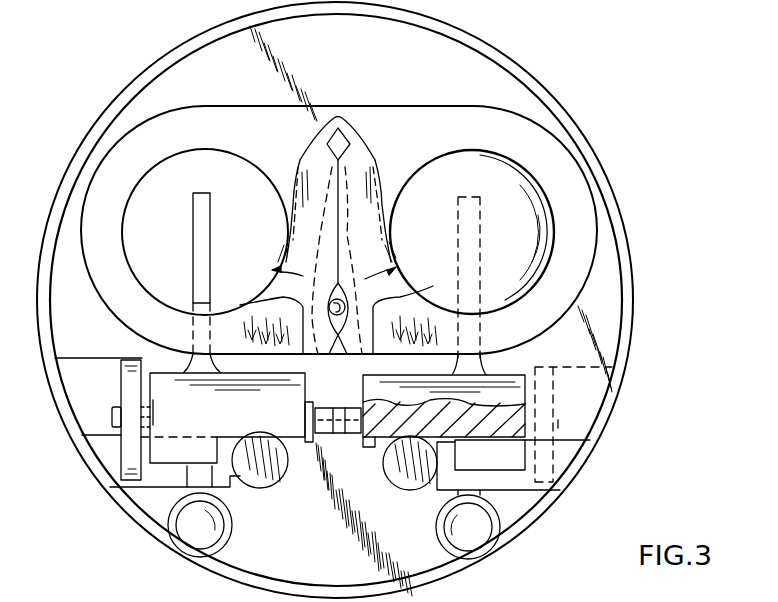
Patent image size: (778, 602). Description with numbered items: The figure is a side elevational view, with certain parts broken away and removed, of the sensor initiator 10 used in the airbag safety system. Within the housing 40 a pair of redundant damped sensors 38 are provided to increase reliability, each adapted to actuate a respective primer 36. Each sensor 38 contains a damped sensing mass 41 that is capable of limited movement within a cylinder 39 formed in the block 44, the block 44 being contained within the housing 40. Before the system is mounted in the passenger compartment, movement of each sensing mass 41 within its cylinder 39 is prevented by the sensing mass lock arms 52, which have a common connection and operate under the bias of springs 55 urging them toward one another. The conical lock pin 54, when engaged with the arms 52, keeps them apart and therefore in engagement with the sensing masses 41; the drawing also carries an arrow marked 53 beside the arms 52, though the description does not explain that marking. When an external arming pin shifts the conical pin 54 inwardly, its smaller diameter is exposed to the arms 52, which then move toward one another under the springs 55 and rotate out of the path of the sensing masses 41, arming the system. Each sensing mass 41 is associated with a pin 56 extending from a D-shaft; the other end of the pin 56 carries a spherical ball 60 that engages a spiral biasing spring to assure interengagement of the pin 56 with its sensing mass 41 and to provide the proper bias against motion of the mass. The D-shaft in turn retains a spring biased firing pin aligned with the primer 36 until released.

The sensor initiator 10 is at (648, 376).
The housing 40 is at (192, 40).
The block 44 is at (75, 305).
The damped sensors 38 is at (173, 97).
The cylinder 39 is at (208, 156).
The sensing mass 41 is at (520, 232).
The sensing mass lock arms 52 is at (368, 140).
The direction of movement 53 is at (295, 267).
The conical lock pin 54 is at (415, 284).
The springs 55 is at (371, 360).
The pin 56 is at (205, 240).
The primers 36 is at (270, 460).
The spherical ball 60 is at (458, 526).